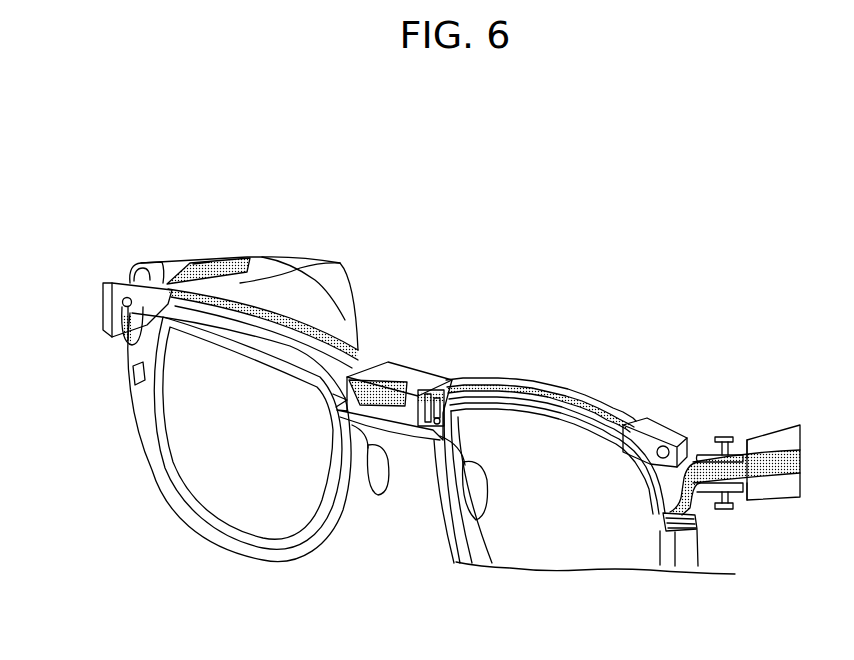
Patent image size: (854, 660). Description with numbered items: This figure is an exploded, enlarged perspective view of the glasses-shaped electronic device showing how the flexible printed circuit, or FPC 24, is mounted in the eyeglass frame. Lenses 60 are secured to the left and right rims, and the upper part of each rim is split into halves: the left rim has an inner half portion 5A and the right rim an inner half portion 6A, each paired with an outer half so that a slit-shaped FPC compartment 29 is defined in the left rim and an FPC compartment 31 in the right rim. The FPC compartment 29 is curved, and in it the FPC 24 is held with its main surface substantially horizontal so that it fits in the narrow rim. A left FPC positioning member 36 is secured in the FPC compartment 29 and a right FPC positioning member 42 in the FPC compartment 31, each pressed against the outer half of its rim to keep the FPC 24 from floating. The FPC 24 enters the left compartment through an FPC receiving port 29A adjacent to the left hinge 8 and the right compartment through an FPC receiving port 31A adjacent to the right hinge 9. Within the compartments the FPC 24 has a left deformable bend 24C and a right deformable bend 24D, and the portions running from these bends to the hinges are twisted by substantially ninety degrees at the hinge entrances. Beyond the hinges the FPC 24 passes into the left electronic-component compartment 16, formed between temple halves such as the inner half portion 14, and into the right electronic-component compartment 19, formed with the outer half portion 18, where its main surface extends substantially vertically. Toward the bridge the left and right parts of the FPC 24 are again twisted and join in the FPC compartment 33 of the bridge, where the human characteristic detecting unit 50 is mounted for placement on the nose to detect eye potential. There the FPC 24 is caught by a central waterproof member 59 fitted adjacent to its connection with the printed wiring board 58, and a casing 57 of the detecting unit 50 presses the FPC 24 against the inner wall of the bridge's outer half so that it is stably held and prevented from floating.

The inner half portion 5A is at (560, 398).
The inner half portion 6A is at (300, 320).
The left hinge 8 is at (731, 510).
The right hinge 9 is at (122, 282).
The inner half portion 14 is at (780, 490).
The left electronic-component compartment 16 is at (767, 456).
The outer half portion 18 is at (160, 262).
The right electronic-component compartment 19 is at (197, 261).
The FPC 24 is at (218, 262).
The left deformable bend 24C is at (666, 532).
The right deformable bend 24D is at (119, 346).
The FPC compartment 29 is at (505, 395).
The FPC receiving port 29A is at (696, 448).
The FPC compartment 31 is at (282, 334).
The FPC receiving port 31A is at (113, 326).
The FPC compartment 33 is at (356, 378).
The left FPC positioning member 36 is at (648, 420).
The right FPC positioning member 42 is at (142, 265).
The human characteristic detecting unit 50 is at (332, 399).
The casing 57 is at (444, 392).
The printed wiring board 58 is at (378, 440).
The central waterproof member 59 is at (414, 398).
The lenses 60 is at (222, 492).